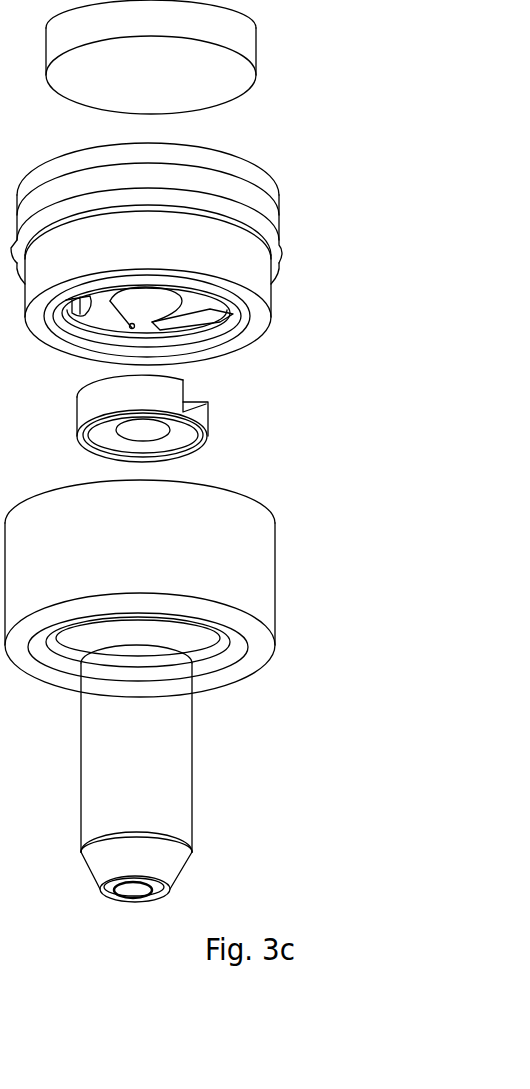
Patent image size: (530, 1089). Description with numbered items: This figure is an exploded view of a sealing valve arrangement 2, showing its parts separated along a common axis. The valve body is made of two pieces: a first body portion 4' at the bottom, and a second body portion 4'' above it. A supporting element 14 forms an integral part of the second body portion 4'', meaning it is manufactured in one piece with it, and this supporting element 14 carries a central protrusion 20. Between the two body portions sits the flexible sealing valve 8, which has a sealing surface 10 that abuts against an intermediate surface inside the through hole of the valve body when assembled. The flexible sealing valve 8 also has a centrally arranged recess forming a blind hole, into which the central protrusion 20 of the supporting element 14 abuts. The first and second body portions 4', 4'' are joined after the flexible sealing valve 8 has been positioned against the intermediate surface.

The sealing valve arrangement 2 is at (297, 128).
The second body portion 4'' is at (176, 265).
The supporting element 14 is at (217, 308).
The central protrusion 20 is at (147, 310).
The flexible sealing valve 8 is at (188, 434).
The sealing surface 10 is at (201, 453).
The first body portion 4' is at (174, 691).